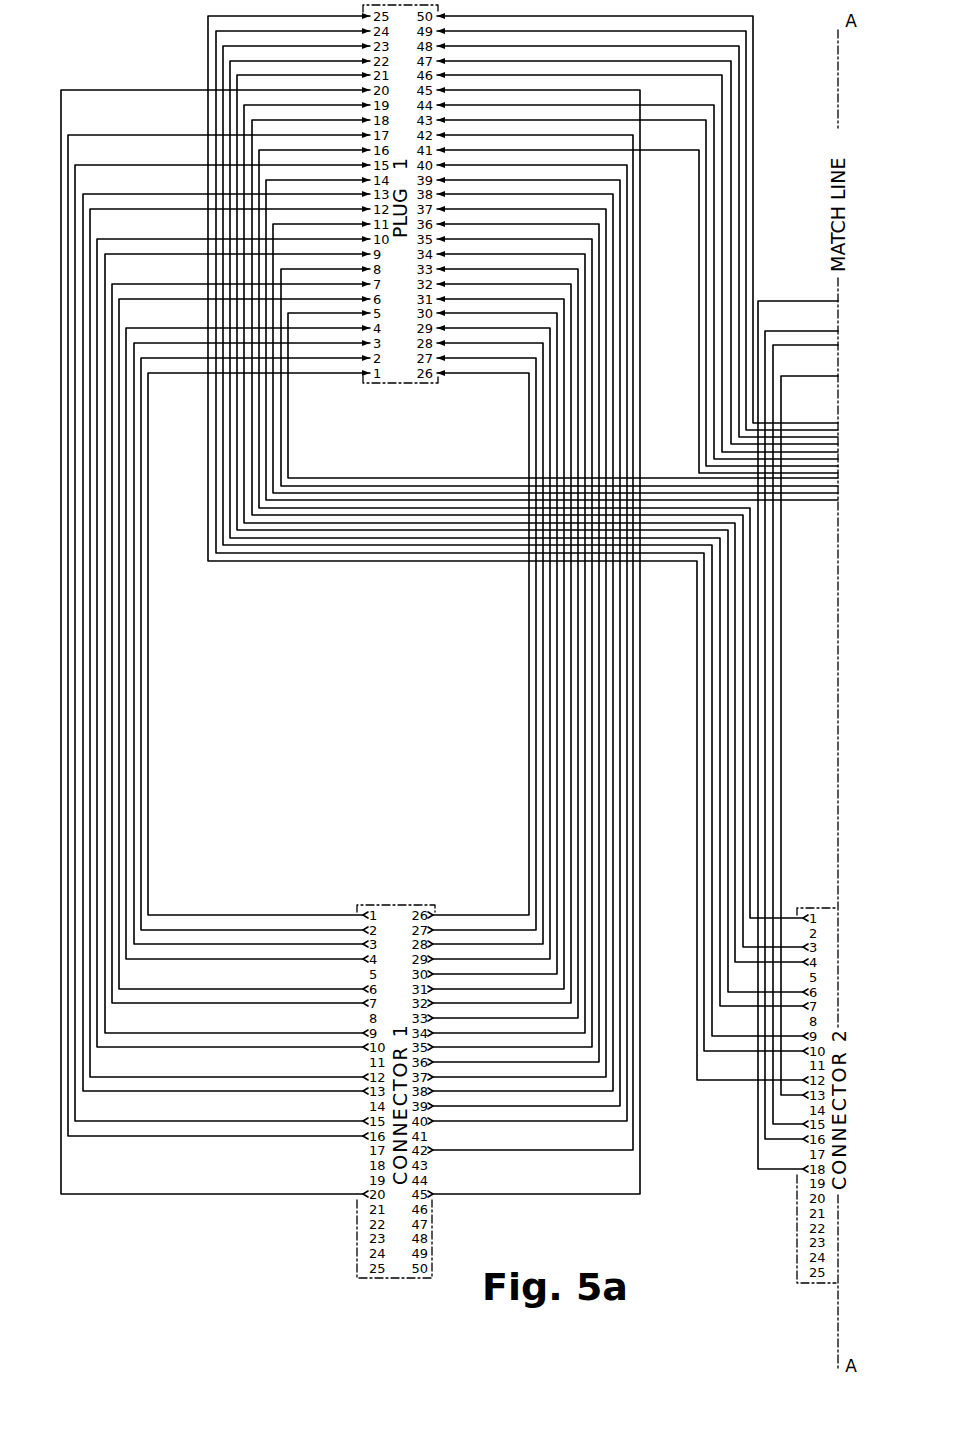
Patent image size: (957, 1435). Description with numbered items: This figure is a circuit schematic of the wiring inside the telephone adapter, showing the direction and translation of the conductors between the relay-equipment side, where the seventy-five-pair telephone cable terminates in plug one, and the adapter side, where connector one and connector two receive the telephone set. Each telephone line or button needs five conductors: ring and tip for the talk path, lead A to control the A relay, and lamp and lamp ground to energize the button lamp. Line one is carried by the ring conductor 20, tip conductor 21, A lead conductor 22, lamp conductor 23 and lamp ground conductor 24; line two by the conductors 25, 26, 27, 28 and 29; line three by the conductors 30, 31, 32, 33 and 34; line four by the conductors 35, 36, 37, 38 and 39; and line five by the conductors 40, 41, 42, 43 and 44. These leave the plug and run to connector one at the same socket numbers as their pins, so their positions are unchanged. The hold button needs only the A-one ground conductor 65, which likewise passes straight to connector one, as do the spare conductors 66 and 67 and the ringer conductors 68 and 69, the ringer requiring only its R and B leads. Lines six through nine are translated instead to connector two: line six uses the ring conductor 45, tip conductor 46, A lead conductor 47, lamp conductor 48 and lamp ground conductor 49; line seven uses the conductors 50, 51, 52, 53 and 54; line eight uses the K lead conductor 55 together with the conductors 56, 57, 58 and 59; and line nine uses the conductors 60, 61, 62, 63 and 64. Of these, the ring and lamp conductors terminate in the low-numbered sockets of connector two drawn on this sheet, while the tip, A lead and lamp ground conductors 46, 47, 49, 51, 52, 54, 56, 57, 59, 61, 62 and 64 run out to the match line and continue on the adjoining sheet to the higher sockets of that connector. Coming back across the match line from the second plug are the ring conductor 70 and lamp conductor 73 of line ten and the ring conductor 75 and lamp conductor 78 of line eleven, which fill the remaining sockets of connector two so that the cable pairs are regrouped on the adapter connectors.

The line one ring conductor 20 is at (317, 373).
The line one tip conductor 21 is at (529, 373).
The line one A lead conductor 22 is at (536, 395).
The line one lamp conductor 23 is at (306, 358).
The line one lamp ground conductor 24 is at (543, 420).
The line two ring conductor 25 is at (347, 328).
The line two tip conductor 26 is at (550, 440).
The line two A lead conductor 27 is at (557, 439).
The line two lamp conductor 28 is at (110, 299).
The line two lamp ground conductor 29 is at (564, 419).
The line three ring conductor 30 is at (101, 284).
The line three tip conductor 31 is at (571, 397).
The line three A lead conductor 32 is at (578, 371).
The line three lamp conductor 33 is at (139, 254).
The line three lamp ground conductor 34 is at (585, 347).
The line four ring conductor 35 is at (88, 239).
The line four tip conductor 36 is at (592, 319).
The line four A lead conductor 37 is at (599, 294).
The line four lamp conductor 38 is at (137, 208).
The line four lamp ground conductor 39 is at (606, 267).
The line five ring conductor 40 is at (78, 192).
The line five tip conductor 41 is at (613, 239).
The line five A lead conductor 42 is at (620, 213).
The line five lamp conductor 43 is at (120, 163).
The line five lamp ground conductor 44 is at (627, 190).
The line six ring conductor 45 is at (266, 178).
The line six tip conductor 46 is at (699, 150).
The line six A lead conductor 47 is at (273, 222).
The line six lamp conductor 48 is at (259, 150).
The line six lamp ground conductor 49 is at (714, 108).
The line seven ring conductor 50 is at (252, 122).
The line seven tip conductor 51 is at (722, 77).
The line seven A lead conductor 52 is at (266, 392).
The line seven lamp conductor 53 is at (244, 105).
The line seven lamp ground conductor 54 is at (682, 76).
The line eight K lead conductor 55 is at (230, 66).
The line eight tip conductor 56 is at (731, 63).
The line eight A lead conductor 57 is at (281, 420).
The line eight lamp conductor 58 is at (216, 34).
The line eight lamp ground conductor 59 is at (746, 32).
The line nine ring conductor 60 is at (208, 19).
The line nine tip conductor 61 is at (753, 17).
The line nine A lead conductor 62 is at (288, 443).
The line nine lamp conductor 63 is at (223, 49).
The line nine lamp ground conductor 64 is at (739, 48).
The A1 ground conductor 65 is at (297, 343).
The spare conductor 66 is at (120, 133).
The spare conductor 67 is at (633, 135).
The ringer R conductor 68 is at (105, 88).
The ringer B conductor 69 is at (640, 92).
The line ten ring conductor 70 is at (743, 1063).
The line ten lamp conductor 73 is at (741, 1099).
The line eleven ring conductor 75 is at (741, 1126).
The line eleven lamp conductor 78 is at (768, 1182).